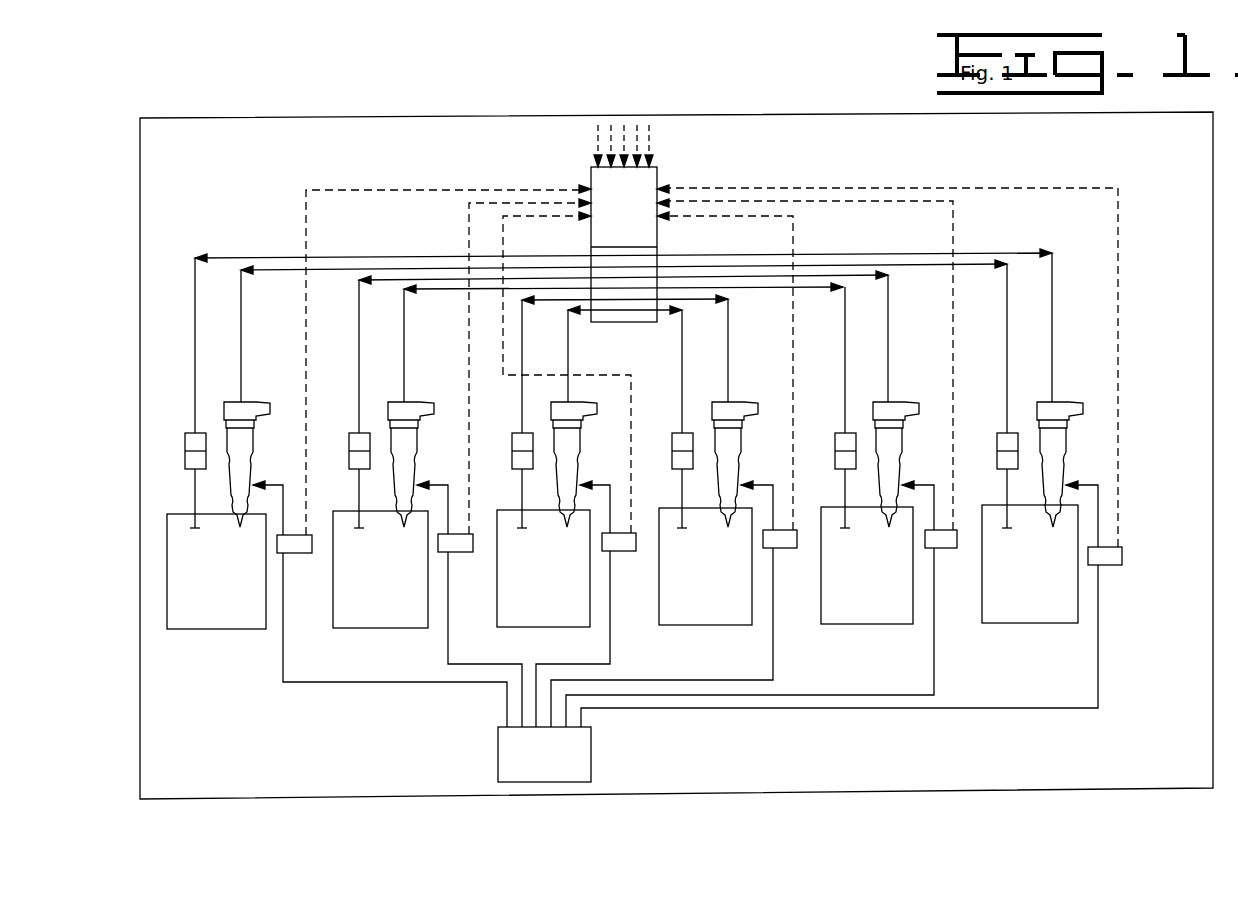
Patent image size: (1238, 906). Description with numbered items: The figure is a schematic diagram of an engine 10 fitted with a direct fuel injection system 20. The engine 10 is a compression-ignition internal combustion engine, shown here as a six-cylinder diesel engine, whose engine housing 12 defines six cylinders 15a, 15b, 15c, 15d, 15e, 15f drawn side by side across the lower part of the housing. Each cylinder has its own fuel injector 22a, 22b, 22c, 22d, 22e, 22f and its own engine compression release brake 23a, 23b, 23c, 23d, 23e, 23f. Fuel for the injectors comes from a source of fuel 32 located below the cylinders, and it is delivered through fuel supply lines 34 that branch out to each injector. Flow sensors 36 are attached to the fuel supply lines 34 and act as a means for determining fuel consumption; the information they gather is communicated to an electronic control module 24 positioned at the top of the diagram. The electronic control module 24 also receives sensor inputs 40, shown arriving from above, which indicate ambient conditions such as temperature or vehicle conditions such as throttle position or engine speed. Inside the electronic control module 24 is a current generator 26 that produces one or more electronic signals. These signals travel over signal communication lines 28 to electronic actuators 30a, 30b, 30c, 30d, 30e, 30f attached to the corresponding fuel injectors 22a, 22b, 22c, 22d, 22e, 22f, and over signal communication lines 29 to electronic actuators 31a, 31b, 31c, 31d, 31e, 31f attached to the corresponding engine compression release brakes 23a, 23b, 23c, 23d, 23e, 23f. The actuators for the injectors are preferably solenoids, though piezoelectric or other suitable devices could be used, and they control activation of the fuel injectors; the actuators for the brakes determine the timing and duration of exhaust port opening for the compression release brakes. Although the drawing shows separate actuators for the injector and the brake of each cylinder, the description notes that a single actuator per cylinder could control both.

The engine 10 is at (155, 85).
The engine housing 12 is at (1015, 793).
The cylinder 15a is at (205, 629).
The cylinder 15b is at (369, 628).
The cylinder 15c is at (530, 627).
The cylinder 15d is at (690, 625).
The cylinder 15e is at (850, 624).
The cylinder 15f is at (1012, 623).
The direct fuel injection system 20 is at (1138, 317).
The fuel injector 22a is at (252, 488).
The fuel injector 22b is at (414, 485).
The fuel injector 22c is at (577, 487).
The fuel injector 22d is at (741, 487).
The fuel injector 22e is at (902, 487).
The fuel injector 22f is at (1064, 487).
The engine compression release brake 23a is at (196, 479).
The engine compression release brake 23b is at (361, 476).
The engine compression release brake 23c is at (524, 476).
The engine compression release brake 23d is at (686, 474).
The engine compression release brake 23e is at (846, 473).
The engine compression release brake 23f is at (1011, 473).
The electronic control module 24 is at (674, 162).
The current generator 26 is at (591, 247).
The signal communication line 28 is at (243, 340).
The signal communication line 29 is at (194, 346).
The electronic actuator 30a is at (252, 402).
The electronic actuator 30b is at (422, 404).
The electronic actuator 30c is at (587, 394).
The electronic actuator 30d is at (743, 400).
The electronic actuator 30e is at (902, 397).
The electronic actuator 30f is at (1065, 397).
The electronic actuator 31a is at (195, 418).
The electronic actuator 31b is at (363, 418).
The electronic actuator 31c is at (525, 420).
The electronic actuator 31d is at (687, 415).
The electronic actuator 31e is at (848, 415).
The electronic actuator 31f is at (1011, 410).
The source of fuel 32 is at (497, 762).
The fuel supply line 34 is at (286, 618).
The flow sensor 36 is at (302, 553).
The sensor inputs 40 is at (588, 140).